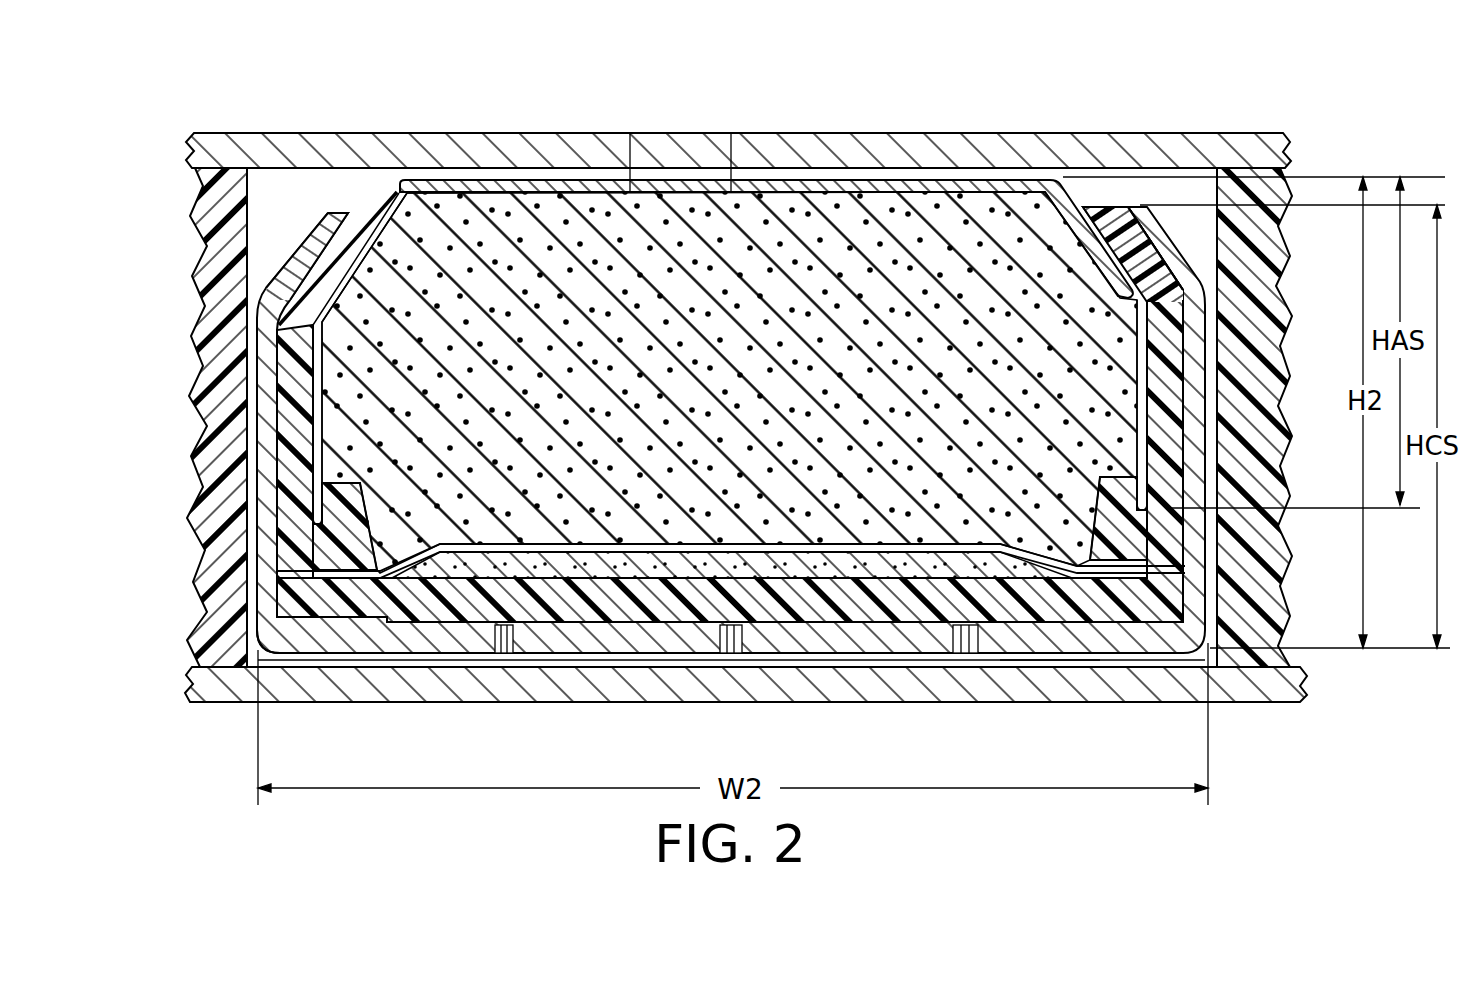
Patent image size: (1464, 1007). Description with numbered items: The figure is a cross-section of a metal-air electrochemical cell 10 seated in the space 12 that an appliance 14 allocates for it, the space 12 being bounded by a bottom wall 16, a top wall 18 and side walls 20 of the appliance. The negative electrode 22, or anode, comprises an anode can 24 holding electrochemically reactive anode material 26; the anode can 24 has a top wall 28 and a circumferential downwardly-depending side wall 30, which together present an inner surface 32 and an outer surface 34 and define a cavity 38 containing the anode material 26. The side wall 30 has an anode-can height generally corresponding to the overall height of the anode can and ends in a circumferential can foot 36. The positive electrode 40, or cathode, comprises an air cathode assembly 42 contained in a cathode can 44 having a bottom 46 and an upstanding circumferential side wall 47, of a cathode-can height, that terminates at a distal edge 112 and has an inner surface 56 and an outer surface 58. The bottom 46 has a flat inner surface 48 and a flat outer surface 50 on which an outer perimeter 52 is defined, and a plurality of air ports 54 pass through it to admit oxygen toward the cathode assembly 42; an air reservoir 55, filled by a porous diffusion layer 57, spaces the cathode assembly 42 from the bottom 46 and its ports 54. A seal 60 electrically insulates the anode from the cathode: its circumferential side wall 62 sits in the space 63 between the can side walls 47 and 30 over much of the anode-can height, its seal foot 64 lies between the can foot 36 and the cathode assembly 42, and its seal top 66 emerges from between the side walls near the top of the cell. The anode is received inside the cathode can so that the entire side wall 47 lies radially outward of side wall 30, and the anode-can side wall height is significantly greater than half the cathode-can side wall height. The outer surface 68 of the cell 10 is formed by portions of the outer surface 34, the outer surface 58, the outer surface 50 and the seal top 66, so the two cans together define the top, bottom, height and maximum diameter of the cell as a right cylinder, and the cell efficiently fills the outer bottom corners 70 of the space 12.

The cell 10 is at (740, 422).
The space 12 is at (731, 422).
The appliance 14 is at (373, 705).
The bottom wall 16 is at (1057, 668).
The top wall 18 is at (653, 170).
The side walls 20 is at (255, 242).
The negative electrode 22 is at (738, 119).
The anode can 24 is at (830, 167).
The anode material 26 is at (729, 413).
The top wall 28 is at (586, 179).
The side wall 30 is at (1152, 283).
The inner surface 32 is at (707, 175).
The outer surface 34 is at (1022, 292).
The can foot 36 is at (350, 530).
The cavity 38 is at (838, 223).
The positive electrode 40 is at (731, 708).
The air cathode assembly 42 is at (566, 582).
The cathode can 44 is at (1078, 654).
The bottom 46 is at (731, 493).
The side wall 47 is at (258, 392).
The inner surface 48 is at (441, 635).
The outer surface 50 is at (345, 657).
The outer perimeter 52 is at (280, 663).
The air ports 54 is at (505, 650).
The air reservoir 55 is at (837, 613).
The inner surface 56 is at (1178, 338).
The porous diffusion layer 57 is at (912, 598).
The outer surface 58 is at (1205, 390).
The seal 60 is at (268, 337).
The side wall 62 is at (735, 423).
The space 63 is at (290, 398).
The seal foot 64 is at (1150, 528).
The seal top 66 is at (1093, 208).
The outer surface 68 is at (766, 185).
The outer bottom corners 70 is at (1233, 630).
The distal edge 112 is at (1115, 206).